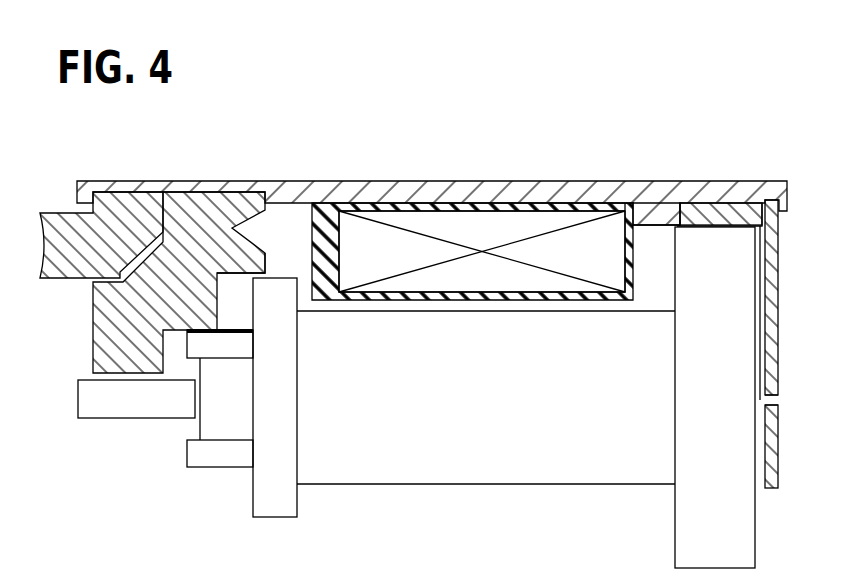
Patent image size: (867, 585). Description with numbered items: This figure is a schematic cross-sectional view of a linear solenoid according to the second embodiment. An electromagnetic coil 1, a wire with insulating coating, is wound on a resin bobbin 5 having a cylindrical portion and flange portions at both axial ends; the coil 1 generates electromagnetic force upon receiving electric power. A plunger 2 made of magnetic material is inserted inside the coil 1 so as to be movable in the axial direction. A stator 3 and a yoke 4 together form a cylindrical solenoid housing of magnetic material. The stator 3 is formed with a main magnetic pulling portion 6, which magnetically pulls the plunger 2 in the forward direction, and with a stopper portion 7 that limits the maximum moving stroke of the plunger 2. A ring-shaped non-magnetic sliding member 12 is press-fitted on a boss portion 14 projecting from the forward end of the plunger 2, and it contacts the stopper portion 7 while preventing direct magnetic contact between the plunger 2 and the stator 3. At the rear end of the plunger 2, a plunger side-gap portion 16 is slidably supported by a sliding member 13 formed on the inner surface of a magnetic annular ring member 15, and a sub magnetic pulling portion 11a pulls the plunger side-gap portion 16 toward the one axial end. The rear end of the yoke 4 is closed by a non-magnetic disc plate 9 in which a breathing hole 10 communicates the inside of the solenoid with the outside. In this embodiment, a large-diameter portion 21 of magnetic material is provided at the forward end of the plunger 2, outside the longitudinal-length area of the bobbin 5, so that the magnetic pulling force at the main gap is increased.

The electromagnetic coil 1 is at (445, 225).
The plunger 2 is at (485, 462).
The stator 3 is at (185, 232).
The yoke 4 is at (535, 190).
The bobbin 5 is at (480, 290).
The main magnetic pulling portion 6 is at (257, 265).
The stopper portion 7 is at (150, 355).
The disc plate 9 is at (780, 325).
The breathing hole 10 is at (778, 402).
The sub magnetic pulling portion 11a is at (673, 194).
The sliding member 12 is at (200, 333).
The sliding member 13 is at (750, 200).
The boss portion 14 is at (215, 420).
The annular ring member 15 is at (712, 212).
The plunger side-gap portion 16 is at (735, 268).
The large-diameter portion 21 is at (283, 290).